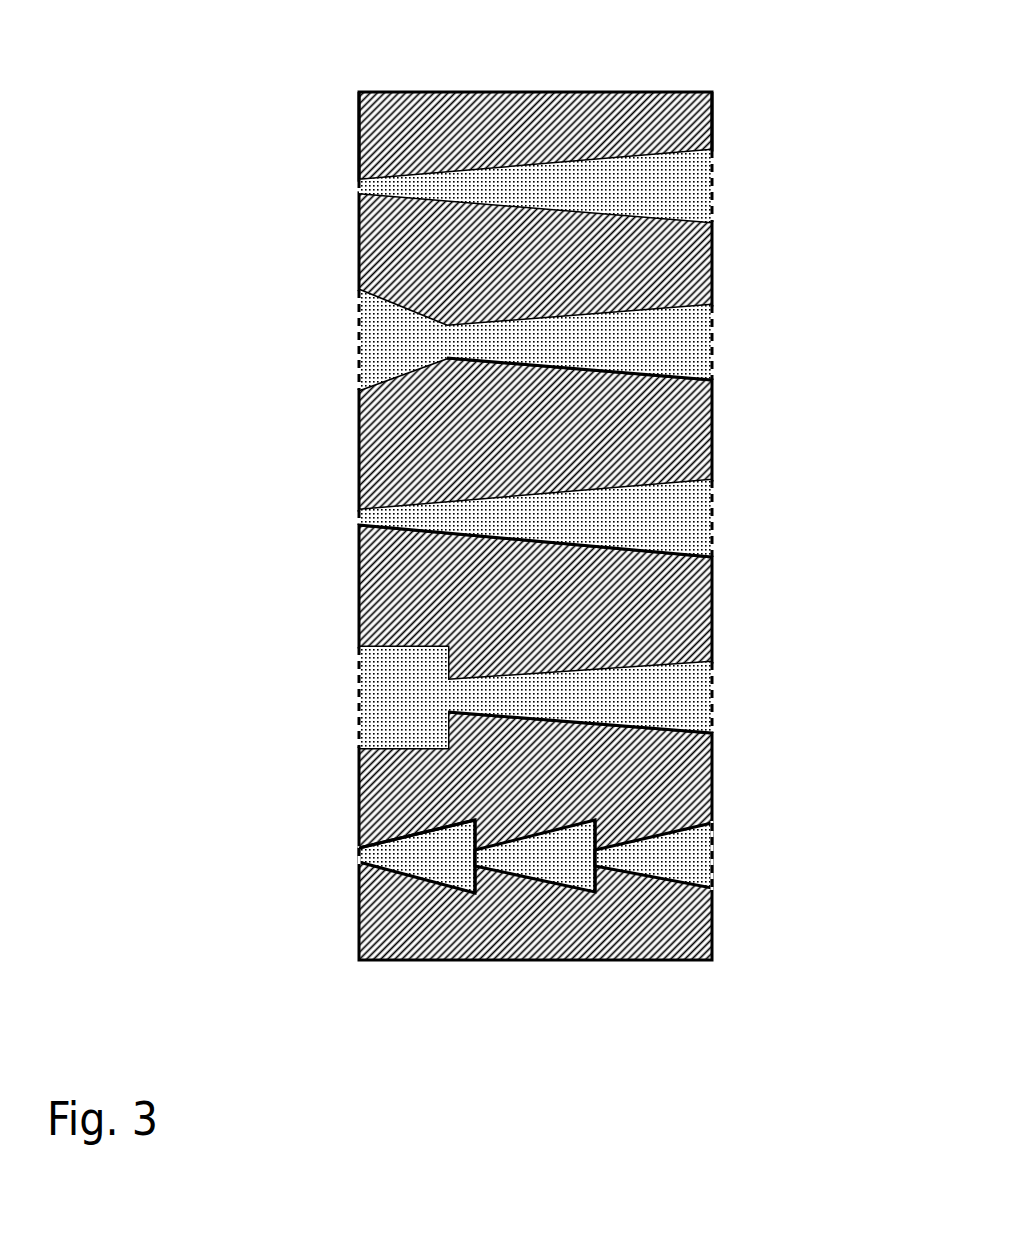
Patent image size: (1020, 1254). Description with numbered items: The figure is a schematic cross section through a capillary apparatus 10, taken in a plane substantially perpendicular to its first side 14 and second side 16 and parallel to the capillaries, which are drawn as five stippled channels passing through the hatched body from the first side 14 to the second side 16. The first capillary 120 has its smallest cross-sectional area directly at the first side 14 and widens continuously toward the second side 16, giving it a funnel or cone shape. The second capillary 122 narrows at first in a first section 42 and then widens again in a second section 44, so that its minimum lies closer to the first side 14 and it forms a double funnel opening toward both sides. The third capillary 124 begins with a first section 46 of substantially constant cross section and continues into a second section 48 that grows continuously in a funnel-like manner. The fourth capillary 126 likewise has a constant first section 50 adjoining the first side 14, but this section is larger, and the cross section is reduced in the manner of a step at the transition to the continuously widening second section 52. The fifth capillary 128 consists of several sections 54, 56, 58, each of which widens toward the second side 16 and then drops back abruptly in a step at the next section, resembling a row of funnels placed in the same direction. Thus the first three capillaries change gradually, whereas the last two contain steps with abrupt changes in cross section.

The capillary apparatus 10 is at (557, 122).
The first side 14 is at (355, 115).
The second side 16 is at (712, 115).
The first section 42 is at (365, 349).
The second section 44 is at (613, 337).
The first section 46 is at (367, 523).
The second section 48 is at (613, 517).
The first section 50 is at (365, 703).
The second section 52 is at (613, 695).
The section 54 is at (363, 862).
The section 56 is at (500, 858).
The section 58 is at (630, 858).
The first capillary 120 is at (678, 193).
The second capillary 122 is at (678, 355).
The third capillary 124 is at (678, 532).
The fourth capillary 126 is at (678, 715).
The fifth capillary 128 is at (677, 857).